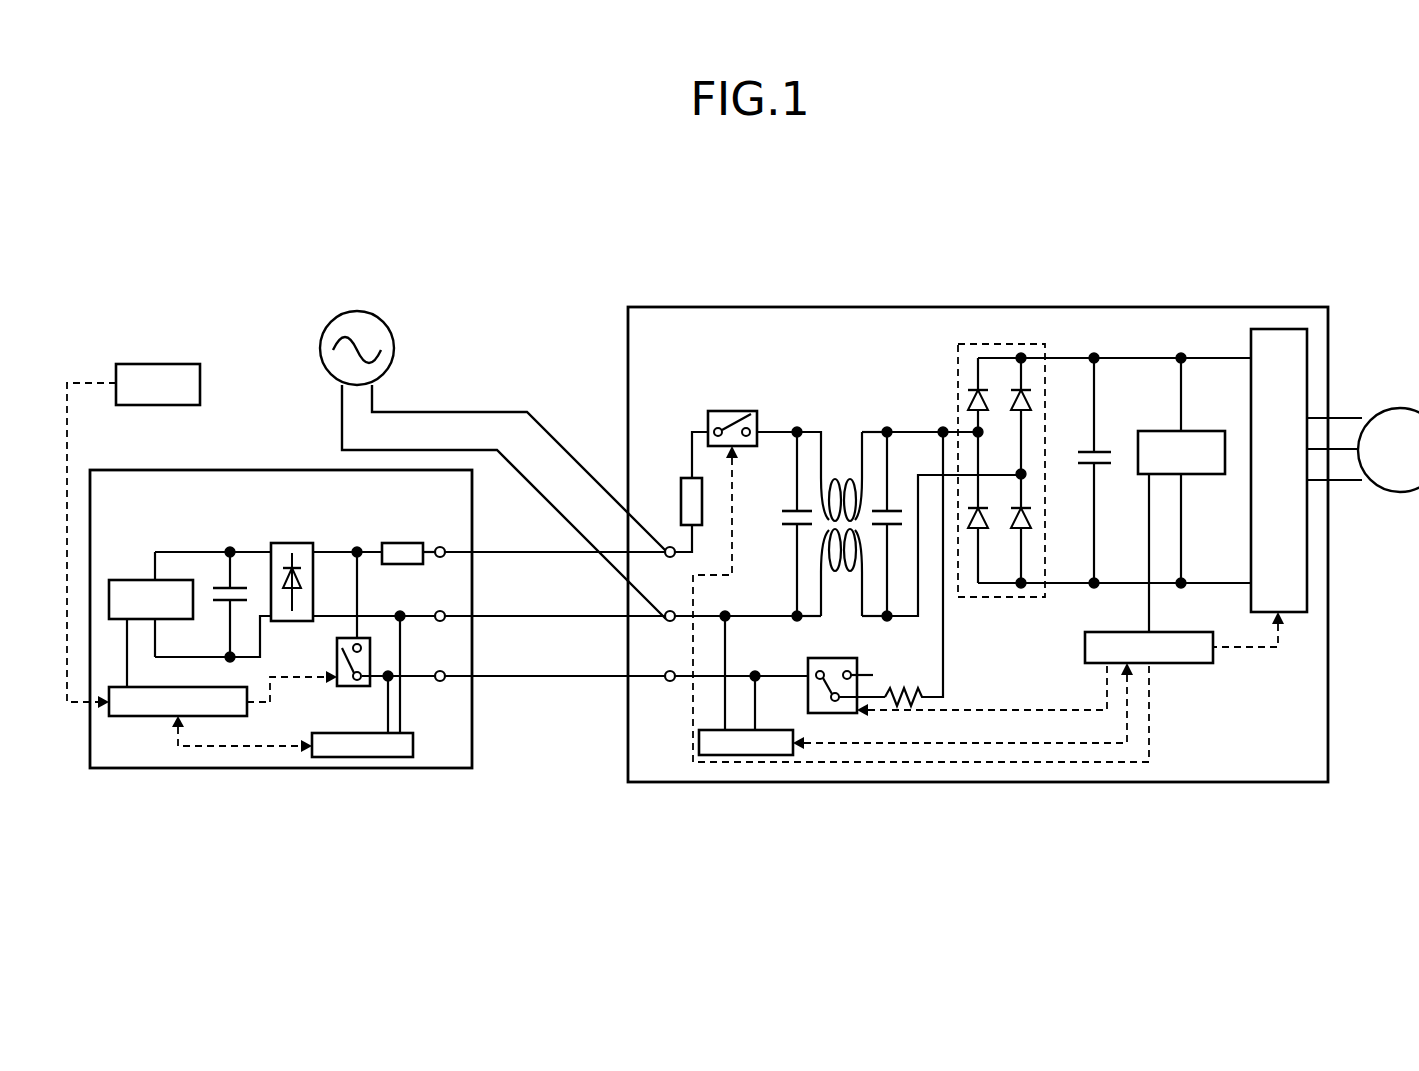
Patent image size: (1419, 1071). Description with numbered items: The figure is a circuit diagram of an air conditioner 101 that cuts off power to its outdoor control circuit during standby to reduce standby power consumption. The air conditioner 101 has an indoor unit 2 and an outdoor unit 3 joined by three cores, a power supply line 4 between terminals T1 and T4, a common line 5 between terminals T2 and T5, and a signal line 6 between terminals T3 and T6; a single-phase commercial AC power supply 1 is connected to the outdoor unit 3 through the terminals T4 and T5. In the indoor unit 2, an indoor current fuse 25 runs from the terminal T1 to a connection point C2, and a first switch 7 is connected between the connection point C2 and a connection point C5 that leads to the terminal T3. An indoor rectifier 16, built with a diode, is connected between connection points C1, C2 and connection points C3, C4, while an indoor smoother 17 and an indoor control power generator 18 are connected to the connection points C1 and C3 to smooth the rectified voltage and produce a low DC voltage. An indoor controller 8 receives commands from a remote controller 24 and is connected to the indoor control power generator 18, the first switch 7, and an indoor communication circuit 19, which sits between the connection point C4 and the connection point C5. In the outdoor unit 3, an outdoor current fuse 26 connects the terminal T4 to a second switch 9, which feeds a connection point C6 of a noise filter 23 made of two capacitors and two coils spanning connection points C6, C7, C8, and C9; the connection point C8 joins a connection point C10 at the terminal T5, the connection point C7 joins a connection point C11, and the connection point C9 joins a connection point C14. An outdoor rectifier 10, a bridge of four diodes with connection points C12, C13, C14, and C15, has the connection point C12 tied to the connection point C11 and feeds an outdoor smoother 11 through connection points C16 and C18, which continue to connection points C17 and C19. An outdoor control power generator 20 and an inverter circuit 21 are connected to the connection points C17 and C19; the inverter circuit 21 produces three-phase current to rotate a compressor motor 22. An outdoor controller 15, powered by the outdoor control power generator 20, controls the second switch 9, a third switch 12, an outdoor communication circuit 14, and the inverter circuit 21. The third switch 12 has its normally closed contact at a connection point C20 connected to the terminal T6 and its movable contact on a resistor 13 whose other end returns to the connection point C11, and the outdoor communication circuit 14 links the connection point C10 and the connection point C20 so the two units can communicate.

The air conditioner 101 is at (888, 266).
The AC power supply 1 is at (357, 313).
The indoor unit 2 is at (242, 470).
The outdoor unit 3 is at (786, 307).
The power supply line 4 is at (507, 552).
The common line 5 is at (507, 616).
The signal line 6 is at (507, 676).
The first switch 7 is at (337, 650).
The indoor controller 8 is at (134, 716).
The second switch 9 is at (722, 411).
The outdoor rectifier 10 is at (958, 369).
The outdoor smoother 11 is at (1101, 448).
The third switch 12 is at (838, 658).
The resistor 13 is at (900, 690).
The outdoor communication circuit 14 is at (699, 744).
The outdoor controller 15 is at (1085, 646).
The indoor rectifier 16 is at (292, 543).
The indoor smoother 17 is at (228, 603).
The indoor control power generator 18 is at (130, 580).
The indoor communication circuit 19 is at (325, 733).
The outdoor control power generator 20 is at (1162, 431).
The inverter circuit 21 is at (1300, 612).
The compressor motor 22 is at (1395, 408).
The noise filter 23 is at (875, 450).
The remote controller 24 is at (200, 386).
The indoor current fuse 25 is at (404, 543).
The outdoor current fuse 26 is at (686, 478).
The terminal T1 is at (442, 547).
The terminal T2 is at (442, 611).
The terminal T3 is at (441, 681).
The terminal T4 is at (668, 547).
The terminal T5 is at (670, 611).
The terminal T6 is at (670, 671).
The connection point C1 is at (230, 548).
The connection point C2 is at (357, 548).
The connection point C3 is at (230, 662).
The connection point C4 is at (400, 611).
The connection point C5 is at (387, 681).
The connection point C6 is at (797, 427).
The connection point C7 is at (887, 427).
The connection point C8 is at (797, 621).
The connection point C9 is at (889, 621).
The connection point C10 is at (728, 613).
The connection point C11 is at (942, 427).
The connection point C12 is at (981, 430).
The connection point C13 is at (1022, 356).
The connection point C14 is at (1023, 471).
The connection point C15 is at (1021, 588).
The connection point C16 is at (1095, 356).
The connection point C17 is at (1182, 356).
The connection point C18 is at (1097, 580).
The connection point C19 is at (1184, 580).
The connection point C20 is at (755, 671).